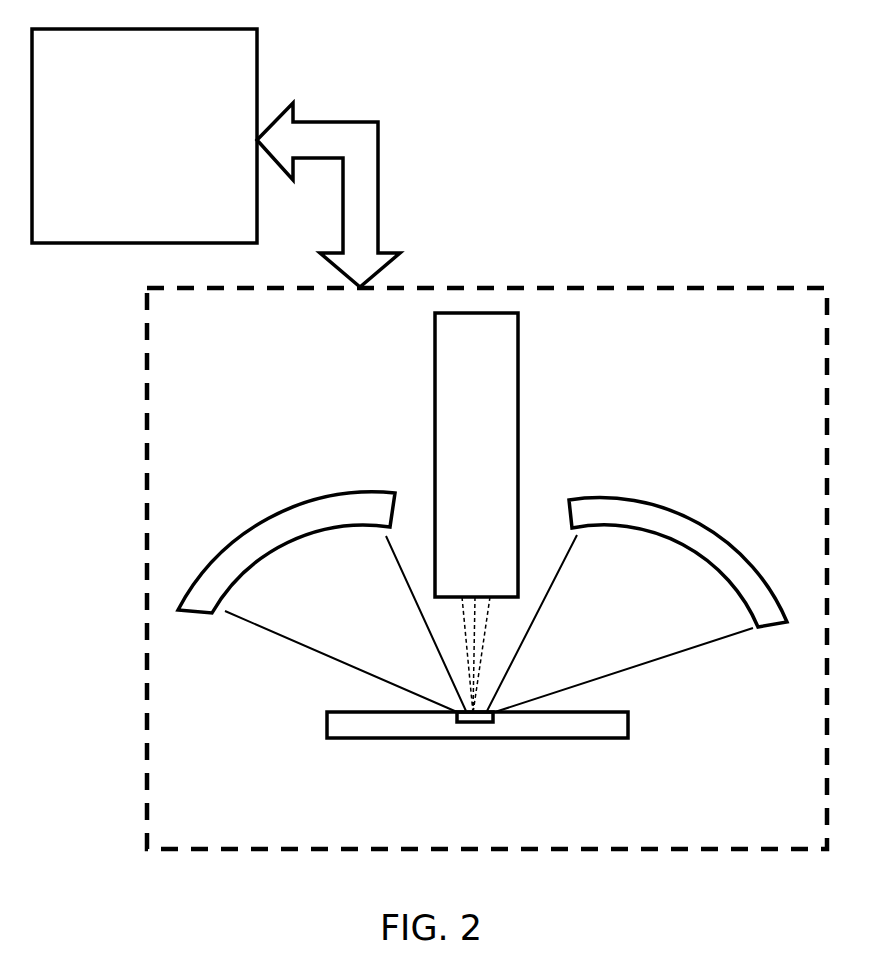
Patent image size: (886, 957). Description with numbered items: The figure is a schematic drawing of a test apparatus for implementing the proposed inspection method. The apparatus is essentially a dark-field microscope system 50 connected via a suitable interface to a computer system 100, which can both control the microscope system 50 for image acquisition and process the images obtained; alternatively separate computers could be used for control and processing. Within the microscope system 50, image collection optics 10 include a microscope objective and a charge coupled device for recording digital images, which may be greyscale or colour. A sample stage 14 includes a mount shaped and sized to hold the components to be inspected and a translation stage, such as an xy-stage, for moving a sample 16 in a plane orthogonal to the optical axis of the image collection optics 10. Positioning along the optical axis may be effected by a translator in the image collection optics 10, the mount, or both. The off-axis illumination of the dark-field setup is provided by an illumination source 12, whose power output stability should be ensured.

The computer system 100 is at (258, 58).
The dark-field microscope system 50 is at (138, 403).
The image collection optics 10 is at (428, 360).
The illumination source 12 is at (250, 522).
The sample stage 14 is at (345, 738).
The sample 16 is at (475, 725).